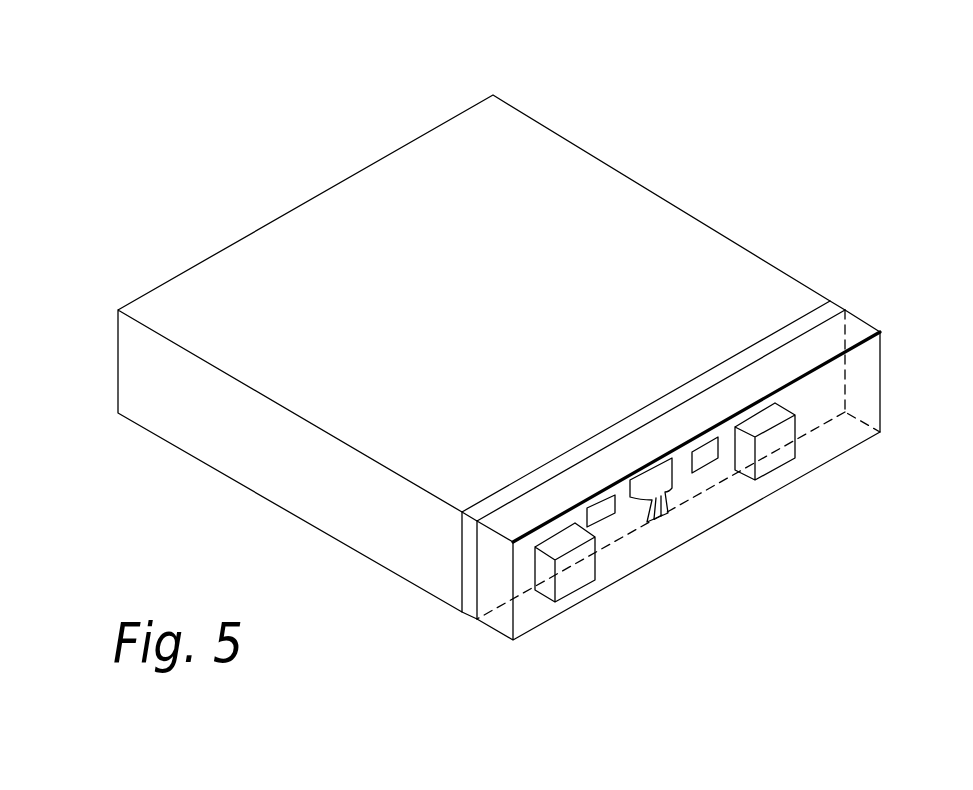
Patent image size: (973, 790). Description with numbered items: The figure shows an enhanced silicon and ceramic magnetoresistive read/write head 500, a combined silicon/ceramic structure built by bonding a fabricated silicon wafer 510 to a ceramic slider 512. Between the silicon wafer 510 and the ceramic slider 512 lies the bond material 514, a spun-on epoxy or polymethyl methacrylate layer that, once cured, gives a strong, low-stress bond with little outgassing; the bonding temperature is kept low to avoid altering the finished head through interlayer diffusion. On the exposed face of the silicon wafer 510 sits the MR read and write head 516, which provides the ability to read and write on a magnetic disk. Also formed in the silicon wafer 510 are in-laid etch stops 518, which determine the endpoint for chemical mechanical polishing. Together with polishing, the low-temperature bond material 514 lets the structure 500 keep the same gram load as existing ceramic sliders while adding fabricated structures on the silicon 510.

The enhanced silicon and ceramic magnetoresistive read/write head 500 is at (525, 335).
The fabricated silicon wafer 510 is at (858, 328).
The ceramic slider 512 is at (682, 225).
The bond material 514 is at (466, 611).
The MR read and write head 516 is at (669, 514).
The in-laid etch stops 518 is at (569, 570).